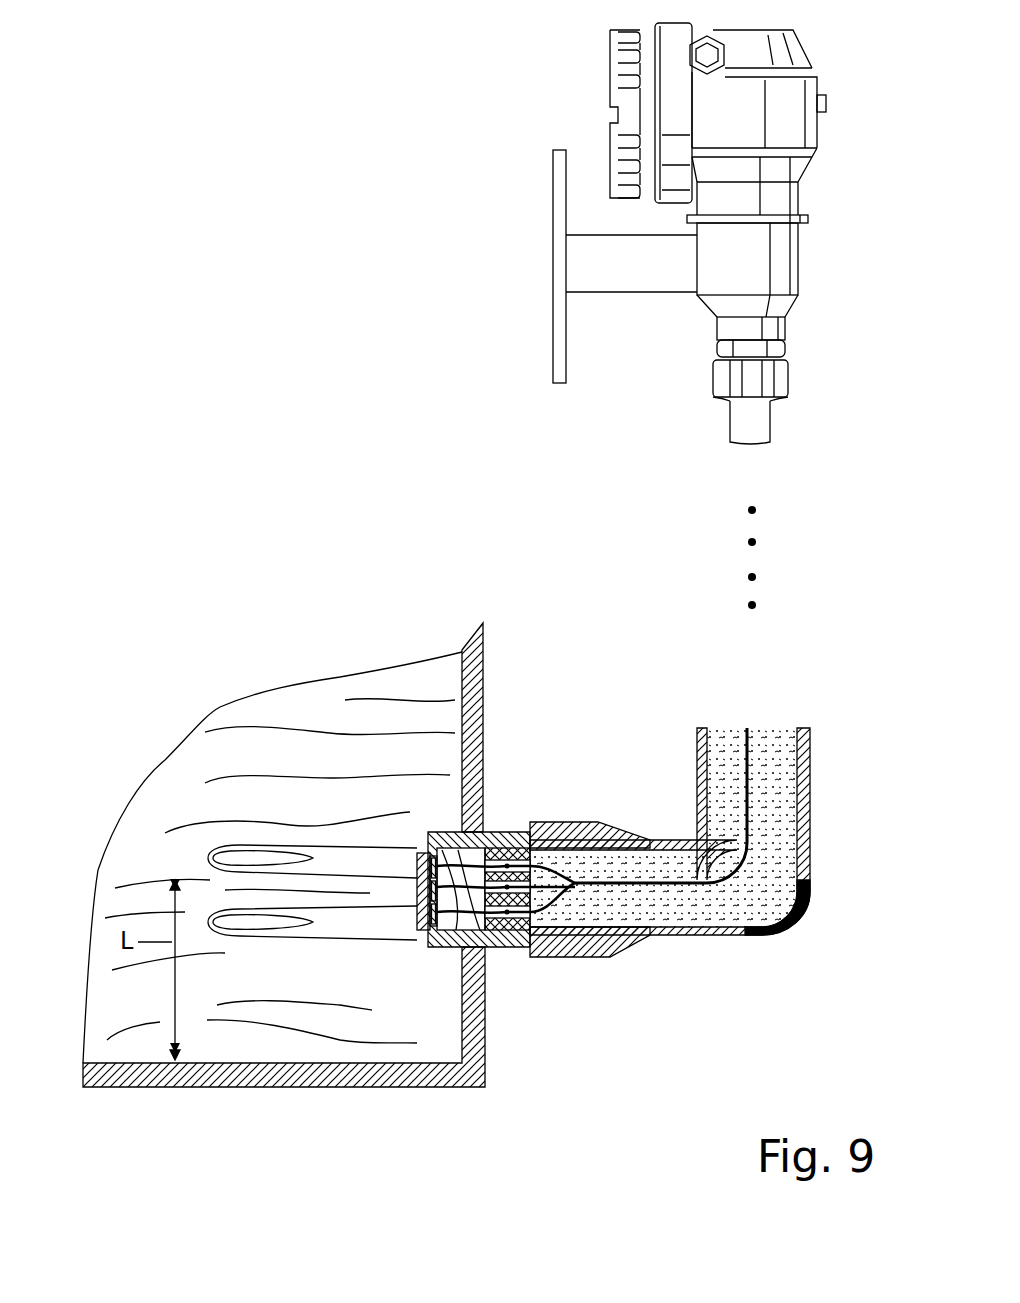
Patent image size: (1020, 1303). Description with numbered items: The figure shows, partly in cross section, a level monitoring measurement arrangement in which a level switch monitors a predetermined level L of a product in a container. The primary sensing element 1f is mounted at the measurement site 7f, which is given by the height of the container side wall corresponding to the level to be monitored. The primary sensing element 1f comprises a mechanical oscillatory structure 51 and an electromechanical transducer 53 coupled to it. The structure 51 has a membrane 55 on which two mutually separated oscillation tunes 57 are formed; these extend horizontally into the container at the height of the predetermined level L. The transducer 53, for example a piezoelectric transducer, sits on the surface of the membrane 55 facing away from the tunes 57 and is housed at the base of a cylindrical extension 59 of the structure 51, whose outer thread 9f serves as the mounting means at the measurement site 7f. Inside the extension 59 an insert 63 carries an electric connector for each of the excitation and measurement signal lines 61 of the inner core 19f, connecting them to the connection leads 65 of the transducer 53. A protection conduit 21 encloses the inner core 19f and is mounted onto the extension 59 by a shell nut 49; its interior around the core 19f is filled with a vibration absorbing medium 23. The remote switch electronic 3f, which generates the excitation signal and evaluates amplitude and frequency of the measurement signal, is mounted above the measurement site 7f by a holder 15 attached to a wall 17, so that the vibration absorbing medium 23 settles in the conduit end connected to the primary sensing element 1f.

The primary sensing element 1f is at (468, 836).
The switch electronic 3f is at (751, 126).
The measurement site 7f is at (483, 700).
The outer thread 9f is at (483, 832).
The holder 15 is at (555, 188).
The wall 17 is at (630, 278).
The inner core 19f is at (670, 893).
The protection conduit 21 is at (697, 762).
The vibration absorbing medium 23 is at (743, 907).
The shell nut 49 is at (575, 822).
The mechanical oscillatory structure 51 is at (367, 966).
The electromechanical transducer 53 is at (468, 968).
The membrane 55 is at (410, 932).
The oscillation tunes 57 is at (336, 850).
The cylindrical extension 59 is at (525, 947).
The excitation and measurement signal lines 61 is at (556, 870).
The insert 63 is at (503, 947).
The connection leads 65 is at (446, 832).